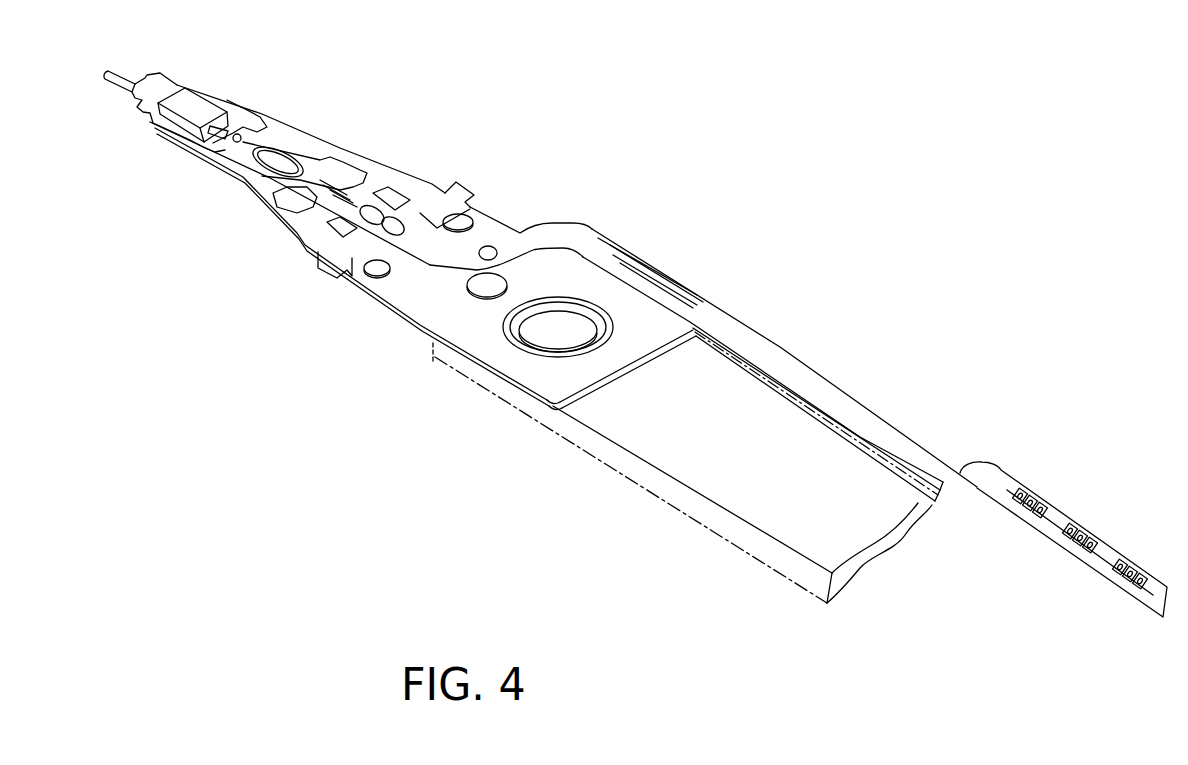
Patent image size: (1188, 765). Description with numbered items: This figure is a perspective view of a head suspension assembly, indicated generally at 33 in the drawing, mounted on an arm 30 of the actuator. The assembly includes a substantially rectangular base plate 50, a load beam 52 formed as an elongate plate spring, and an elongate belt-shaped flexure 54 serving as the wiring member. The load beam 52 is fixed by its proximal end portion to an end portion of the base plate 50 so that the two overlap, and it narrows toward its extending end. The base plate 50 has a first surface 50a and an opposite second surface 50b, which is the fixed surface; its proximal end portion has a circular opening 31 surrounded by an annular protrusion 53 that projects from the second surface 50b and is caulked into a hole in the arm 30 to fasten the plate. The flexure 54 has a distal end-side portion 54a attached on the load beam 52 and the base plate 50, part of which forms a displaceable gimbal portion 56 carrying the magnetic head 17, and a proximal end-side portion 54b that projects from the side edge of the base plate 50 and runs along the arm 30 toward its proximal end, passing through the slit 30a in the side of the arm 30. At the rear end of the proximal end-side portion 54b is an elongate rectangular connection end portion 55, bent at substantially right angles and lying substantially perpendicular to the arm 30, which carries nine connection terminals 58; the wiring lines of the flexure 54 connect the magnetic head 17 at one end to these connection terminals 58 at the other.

The magnetic head 17 is at (193, 98).
The arm 30 is at (732, 487).
The slit 30a is at (933, 507).
The swage hole 31 is at (542, 340).
The head gimbal assembly 33 is at (519, 190).
The base plate 50 is at (475, 327).
The first surface 50a is at (628, 348).
The second surface 50b is at (580, 398).
The load beam 52 is at (373, 173).
The annular protrusion 53 is at (585, 353).
The flexure 54 is at (706, 284).
The distal end-side portion 54a is at (359, 248).
The proximal end-side portion 54b is at (873, 392).
The connection end portion 55 is at (1062, 487).
The gimbal portion 56 is at (210, 140).
The connection terminals 58 is at (1040, 517).